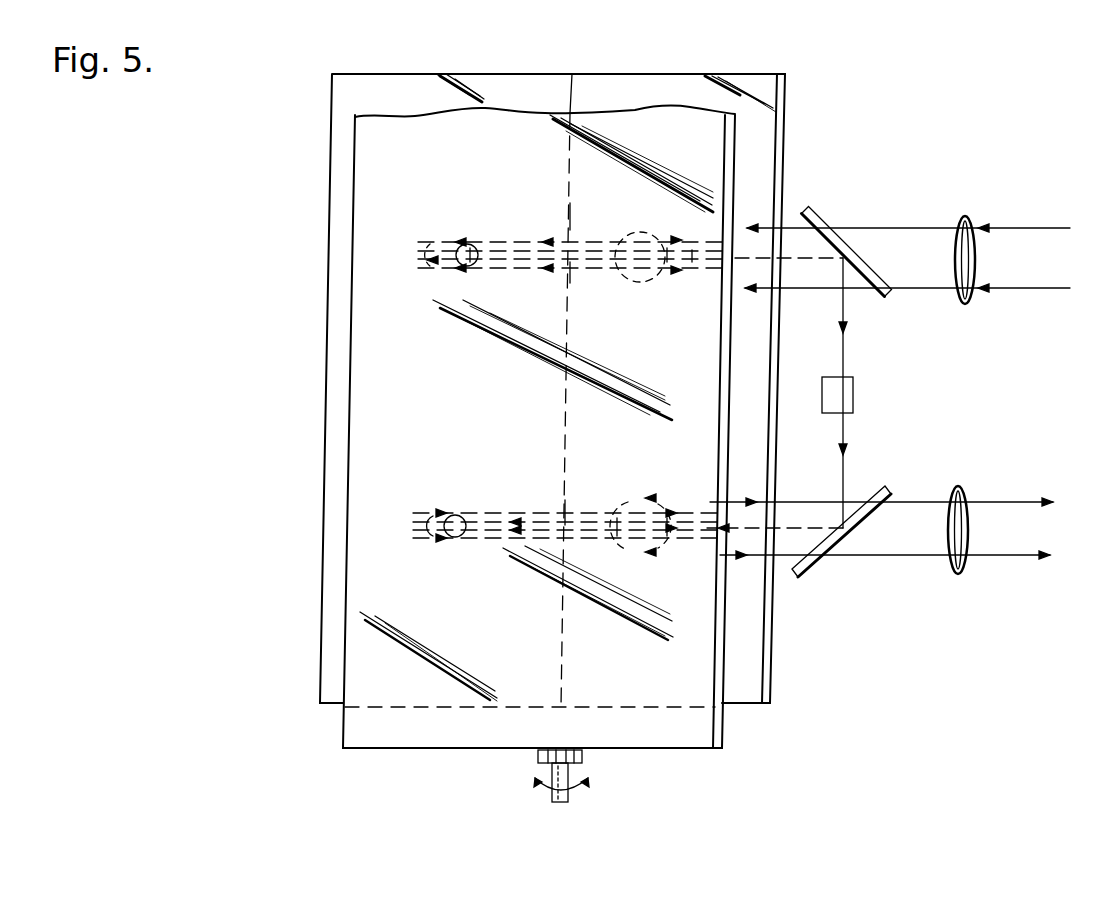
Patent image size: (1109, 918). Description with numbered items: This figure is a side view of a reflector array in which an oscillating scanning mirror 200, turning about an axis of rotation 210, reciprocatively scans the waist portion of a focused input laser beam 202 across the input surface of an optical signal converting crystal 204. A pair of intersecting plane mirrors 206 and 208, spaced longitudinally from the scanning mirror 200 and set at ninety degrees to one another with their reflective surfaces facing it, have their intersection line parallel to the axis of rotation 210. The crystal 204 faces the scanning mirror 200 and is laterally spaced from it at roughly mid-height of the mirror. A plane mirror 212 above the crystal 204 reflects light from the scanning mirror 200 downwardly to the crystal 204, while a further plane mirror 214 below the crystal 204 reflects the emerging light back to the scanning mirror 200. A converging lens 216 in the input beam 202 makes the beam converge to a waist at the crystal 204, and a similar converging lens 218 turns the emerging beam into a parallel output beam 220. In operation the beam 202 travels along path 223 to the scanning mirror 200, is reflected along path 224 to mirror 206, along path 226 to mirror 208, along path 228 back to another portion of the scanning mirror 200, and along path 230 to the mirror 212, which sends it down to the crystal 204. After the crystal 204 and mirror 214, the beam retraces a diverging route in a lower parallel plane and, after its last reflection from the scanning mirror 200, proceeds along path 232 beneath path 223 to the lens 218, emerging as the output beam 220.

The oscillating scanning mirror 200 is at (415, 733).
The input laser beam 202 is at (1035, 262).
The optical signal converting crystal 204 is at (855, 392).
The plane mirror 206 is at (678, 92).
The plane mirror 208 is at (356, 92).
The axis of rotation 210 is at (566, 800).
The plane mirror 212 is at (822, 212).
The plane mirror 214 is at (825, 563).
The converging lens 216 is at (970, 220).
The converging lens 218 is at (962, 570).
The output beam 220 is at (1010, 525).
The path 223 is at (878, 242).
The path 224 is at (670, 236).
The path 226 is at (514, 243).
The path 228 is at (428, 246).
The path 230 is at (597, 262).
The path 232 is at (882, 537).